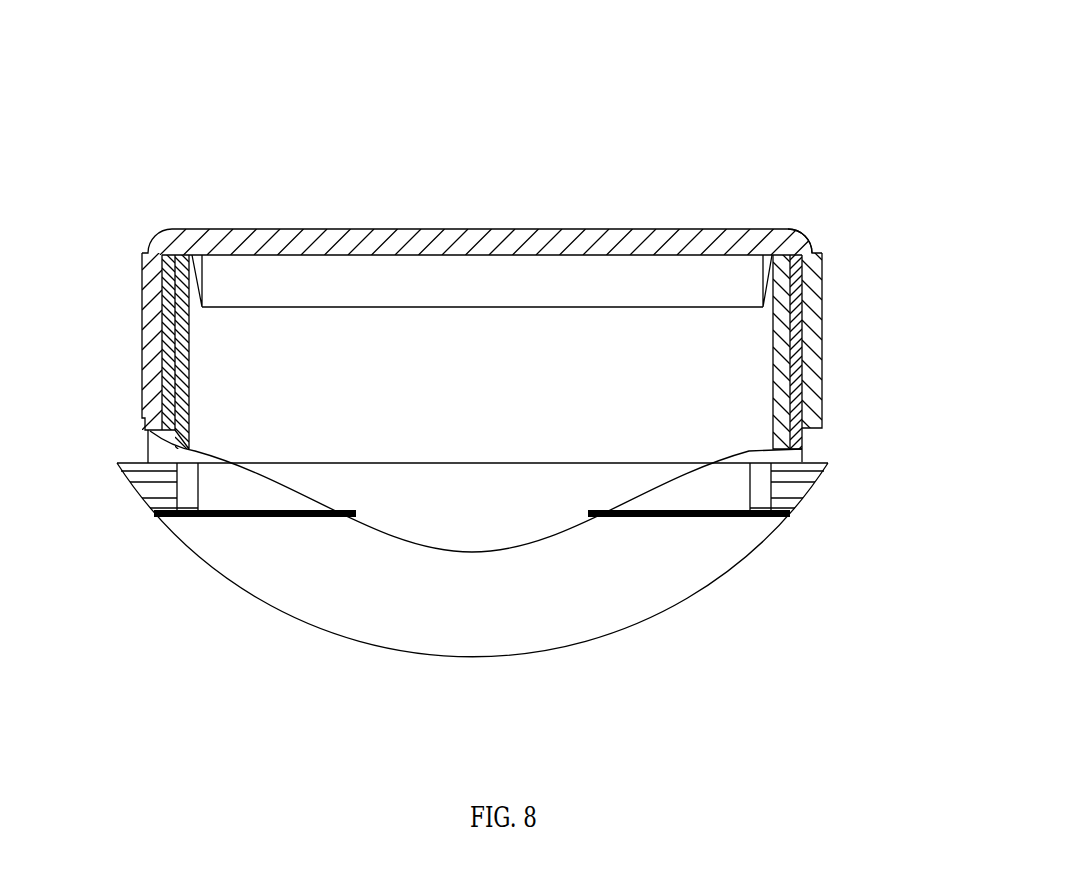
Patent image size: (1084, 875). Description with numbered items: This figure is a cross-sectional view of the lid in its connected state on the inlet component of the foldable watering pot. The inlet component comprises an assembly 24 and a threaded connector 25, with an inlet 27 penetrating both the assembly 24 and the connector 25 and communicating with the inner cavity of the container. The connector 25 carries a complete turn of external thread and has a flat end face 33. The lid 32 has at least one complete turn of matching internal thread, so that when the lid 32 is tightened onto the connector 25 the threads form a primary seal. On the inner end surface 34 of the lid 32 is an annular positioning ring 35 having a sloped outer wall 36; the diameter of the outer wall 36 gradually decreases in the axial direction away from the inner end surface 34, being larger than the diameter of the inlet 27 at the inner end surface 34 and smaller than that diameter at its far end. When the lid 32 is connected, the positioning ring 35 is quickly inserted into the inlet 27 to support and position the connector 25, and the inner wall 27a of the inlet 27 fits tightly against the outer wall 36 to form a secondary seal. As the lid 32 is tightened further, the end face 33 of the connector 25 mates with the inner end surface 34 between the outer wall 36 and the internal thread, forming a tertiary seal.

The assembly 24 is at (540, 625).
The threaded connector 25 is at (820, 349).
The inlet 27 is at (644, 346).
The inner wall of the inlet 27a is at (200, 352).
The lid 32 is at (526, 216).
The end face of the connector 33 is at (807, 230).
The inner end surface of the lid 34 is at (182, 232).
The annular positioning ring 35 is at (791, 280).
The sloped outer wall 36 is at (172, 287).